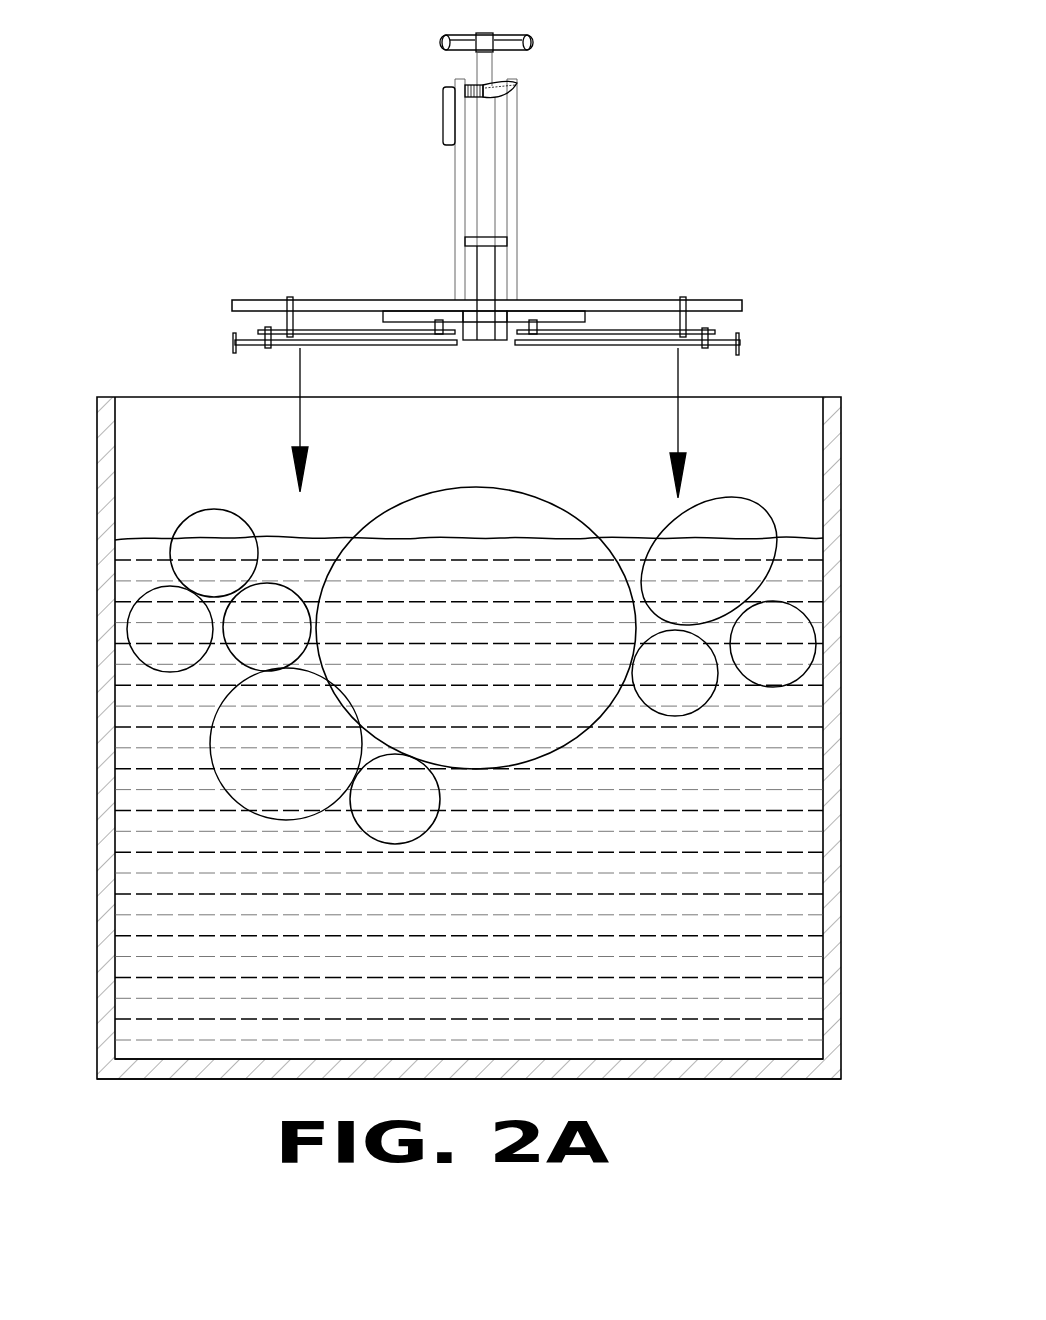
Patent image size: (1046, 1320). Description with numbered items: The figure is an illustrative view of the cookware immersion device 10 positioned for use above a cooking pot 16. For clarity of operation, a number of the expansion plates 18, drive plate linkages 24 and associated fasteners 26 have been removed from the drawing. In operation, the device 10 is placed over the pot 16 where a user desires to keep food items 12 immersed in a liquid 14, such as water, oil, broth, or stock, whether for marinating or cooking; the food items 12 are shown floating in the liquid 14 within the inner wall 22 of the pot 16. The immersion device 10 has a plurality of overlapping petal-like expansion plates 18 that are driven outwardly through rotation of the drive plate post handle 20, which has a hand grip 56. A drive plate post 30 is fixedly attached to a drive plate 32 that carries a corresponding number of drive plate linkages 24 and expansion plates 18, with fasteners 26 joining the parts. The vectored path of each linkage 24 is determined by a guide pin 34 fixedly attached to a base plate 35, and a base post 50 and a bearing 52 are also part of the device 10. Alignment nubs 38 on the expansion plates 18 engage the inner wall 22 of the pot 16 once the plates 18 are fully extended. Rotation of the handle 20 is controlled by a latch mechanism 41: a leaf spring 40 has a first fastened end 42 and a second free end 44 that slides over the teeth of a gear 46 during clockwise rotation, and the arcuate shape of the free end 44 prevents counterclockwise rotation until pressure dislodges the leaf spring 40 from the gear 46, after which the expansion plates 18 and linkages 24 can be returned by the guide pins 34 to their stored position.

The cookware immersion device 10 is at (644, 211).
The food item 12 is at (678, 523).
The liquid 14 is at (148, 805).
The cooking pot 16 is at (780, 1080).
The expansion plate 18 is at (395, 346).
The handle 20 is at (533, 44).
The inner wall of cooking pot 22 is at (822, 473).
The drive plate linkage 24 is at (258, 332).
The fastener 26 is at (266, 330).
The drive plate post 30 is at (490, 190).
The drive plate 32 is at (385, 314).
The guide pin 34 is at (289, 300).
The base plate 35 is at (588, 300).
The alignment nub 38 is at (233, 345).
The leaf spring 40 is at (485, 103).
The latch mechanism 41 is at (507, 104).
The fastened end of leaf spring 42 is at (500, 88).
The free end of leaf spring 44 is at (447, 84).
The gear 46 is at (465, 78).
The base post 50 is at (517, 155).
The bearing 52 is at (465, 242).
The hand grip 56 is at (448, 145).